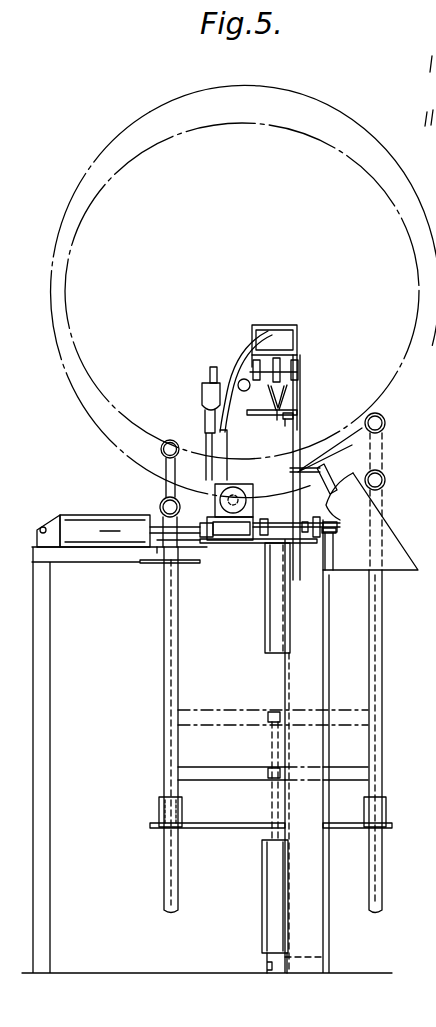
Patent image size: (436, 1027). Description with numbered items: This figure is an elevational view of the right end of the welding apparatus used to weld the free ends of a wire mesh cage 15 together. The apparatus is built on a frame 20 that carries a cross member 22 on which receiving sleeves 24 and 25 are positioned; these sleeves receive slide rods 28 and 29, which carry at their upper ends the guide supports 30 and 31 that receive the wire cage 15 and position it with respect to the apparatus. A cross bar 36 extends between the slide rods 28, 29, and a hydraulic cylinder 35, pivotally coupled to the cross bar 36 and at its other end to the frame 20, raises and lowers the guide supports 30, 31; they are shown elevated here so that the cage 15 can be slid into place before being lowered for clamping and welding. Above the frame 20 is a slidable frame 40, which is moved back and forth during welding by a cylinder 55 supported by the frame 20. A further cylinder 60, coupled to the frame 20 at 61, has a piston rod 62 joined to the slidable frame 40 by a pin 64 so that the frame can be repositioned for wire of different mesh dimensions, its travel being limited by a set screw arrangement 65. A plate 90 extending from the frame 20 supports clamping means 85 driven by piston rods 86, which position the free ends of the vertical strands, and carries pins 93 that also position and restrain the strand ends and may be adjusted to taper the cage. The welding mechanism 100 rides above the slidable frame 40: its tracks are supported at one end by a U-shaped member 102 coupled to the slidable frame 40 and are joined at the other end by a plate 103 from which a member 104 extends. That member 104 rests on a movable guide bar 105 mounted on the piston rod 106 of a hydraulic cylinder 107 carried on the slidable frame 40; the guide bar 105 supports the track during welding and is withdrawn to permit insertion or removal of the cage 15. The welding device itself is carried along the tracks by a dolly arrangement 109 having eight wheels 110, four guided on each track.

The wire cage 15 is at (138, 150).
The frame 20 is at (70, 607).
The cross member 22 is at (213, 828).
The receiving sleeve 24 is at (160, 812).
The receiving sleeve 25 is at (367, 805).
The slide rod 28 is at (164, 677).
The slide rod 29 is at (369, 668).
The guide support 30 is at (160, 503).
The guide support 31 is at (387, 478).
The hydraulic cylinder 35 is at (267, 902).
The cross bar 36 is at (224, 772).
The slidable frame 40 is at (230, 540).
The cylinder 55 is at (234, 492).
The cylinder 60 is at (77, 515).
The coupling point 61 is at (202, 537).
The piston rod 62 is at (160, 540).
The pin 64 is at (42, 530).
The set screw arrangement 65 is at (330, 533).
The clamping means 85 is at (317, 452).
The piston rod 86 is at (363, 467).
The plate 90 is at (383, 511).
The pin 93 is at (339, 497).
The welding mechanism 100 is at (194, 364).
The U-shaped member 102 is at (273, 325).
The plate 103 is at (290, 395).
The member 104 is at (276, 395).
The guide bar 105 is at (294, 415).
The piston rod 106 is at (277, 513).
The hydraulic cylinder 107 is at (273, 623).
The dolly arrangement 109 is at (243, 383).
The wheels 110 is at (298, 368).